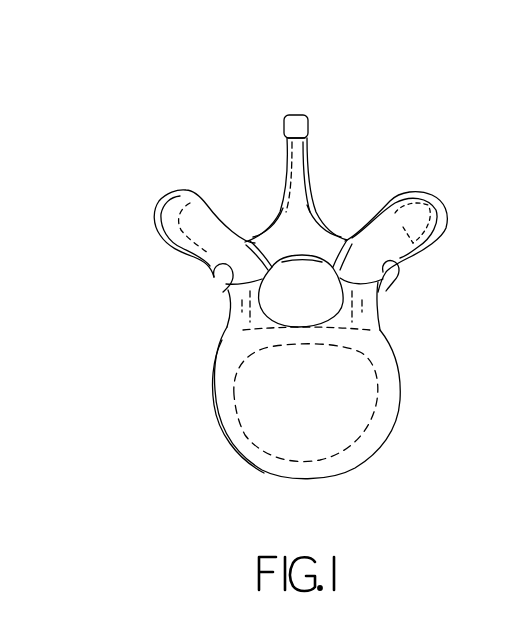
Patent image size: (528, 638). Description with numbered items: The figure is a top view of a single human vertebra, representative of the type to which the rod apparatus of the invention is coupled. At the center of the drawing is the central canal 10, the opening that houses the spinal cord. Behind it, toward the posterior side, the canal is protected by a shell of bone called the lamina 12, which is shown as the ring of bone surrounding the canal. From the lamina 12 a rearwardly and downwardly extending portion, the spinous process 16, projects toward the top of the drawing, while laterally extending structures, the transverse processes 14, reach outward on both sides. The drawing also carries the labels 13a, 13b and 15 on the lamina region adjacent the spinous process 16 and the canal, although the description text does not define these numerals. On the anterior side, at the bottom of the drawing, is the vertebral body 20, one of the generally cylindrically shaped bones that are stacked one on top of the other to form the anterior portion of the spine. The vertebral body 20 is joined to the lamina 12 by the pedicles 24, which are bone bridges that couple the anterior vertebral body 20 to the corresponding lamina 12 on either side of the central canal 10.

The central canal 10 is at (317, 306).
The lamina 12 is at (357, 180).
The right superior articular process 13a is at (347, 237).
The left superior articular process 13b is at (272, 224).
The transverse process 14 is at (168, 191).
The lamina 15 is at (277, 267).
The spinous process 16 is at (298, 114).
The vertebral body 20 is at (328, 414).
The pedicle 24 is at (240, 305).